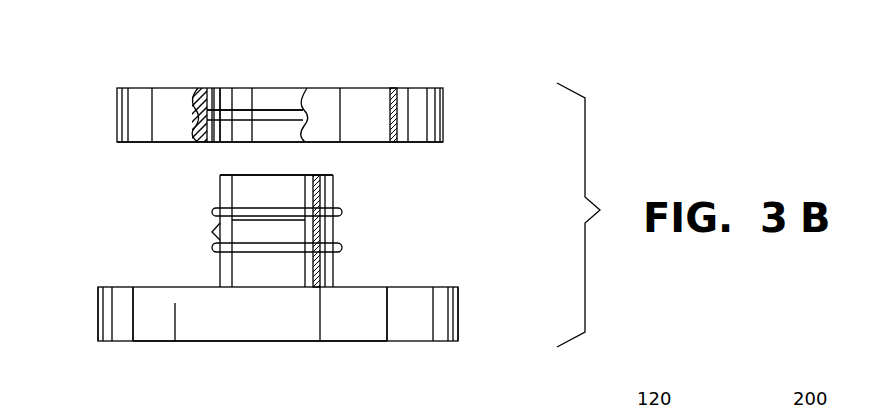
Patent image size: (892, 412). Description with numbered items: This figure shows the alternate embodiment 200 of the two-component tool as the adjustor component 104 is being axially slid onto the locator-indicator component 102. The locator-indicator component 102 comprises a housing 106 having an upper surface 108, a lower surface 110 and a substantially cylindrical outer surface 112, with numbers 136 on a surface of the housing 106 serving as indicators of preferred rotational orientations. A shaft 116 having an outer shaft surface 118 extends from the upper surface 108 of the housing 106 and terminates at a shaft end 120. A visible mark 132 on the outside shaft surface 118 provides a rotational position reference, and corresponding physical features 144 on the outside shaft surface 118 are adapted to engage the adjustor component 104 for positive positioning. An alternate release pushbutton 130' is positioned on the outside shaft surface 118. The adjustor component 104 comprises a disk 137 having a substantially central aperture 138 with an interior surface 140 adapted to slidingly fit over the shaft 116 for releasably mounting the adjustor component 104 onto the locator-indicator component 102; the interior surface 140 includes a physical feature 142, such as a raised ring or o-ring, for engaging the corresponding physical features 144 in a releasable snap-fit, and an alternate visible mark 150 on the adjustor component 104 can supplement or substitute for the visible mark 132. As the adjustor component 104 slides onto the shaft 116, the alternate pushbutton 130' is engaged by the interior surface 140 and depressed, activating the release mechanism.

The locator-indicator component 102 is at (463, 312).
The adjustor component 104 is at (135, 146).
The housing 106 is at (113, 287).
The upper surface 108 is at (432, 287).
The lower surface 110 is at (333, 342).
The outer surface 112 is at (198, 324).
The shaft 116 is at (232, 265).
The outer shaft surface 118 is at (333, 196).
The shaft end 120 is at (323, 178).
The alternate release pushbutton 130' is at (174, 219).
The visible mark 132 is at (325, 229).
The numbers 136 is at (155, 303).
The disk 137 is at (440, 110).
The central aperture 138 is at (220, 97).
The interior surface 140 is at (213, 142).
The physical feature 142 is at (283, 113).
The corresponding physical features 144 is at (283, 208).
The alternate visible mark 150 is at (397, 112).
The alternate embodiment 200 is at (460, 205).